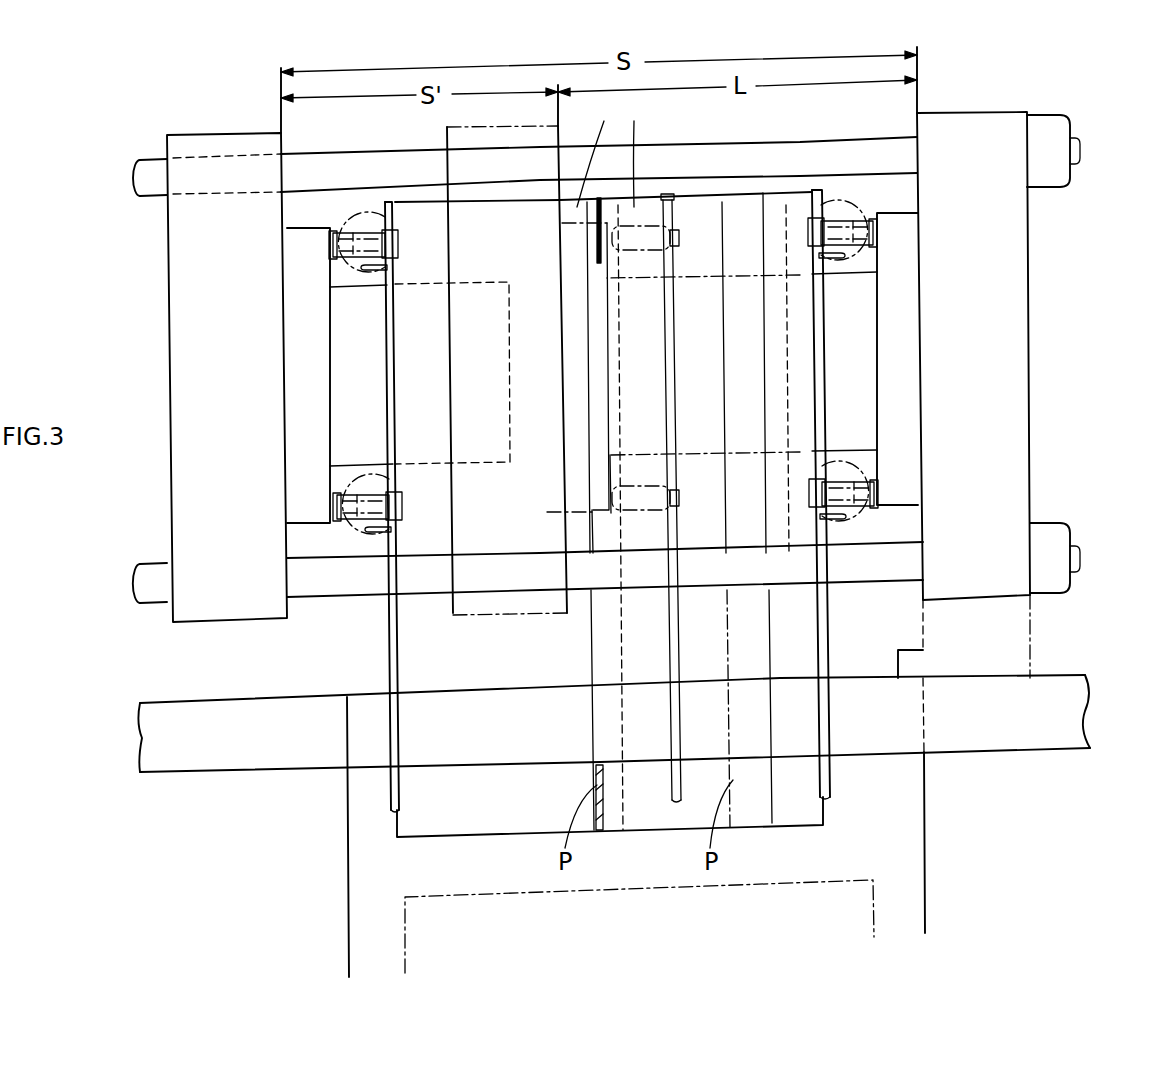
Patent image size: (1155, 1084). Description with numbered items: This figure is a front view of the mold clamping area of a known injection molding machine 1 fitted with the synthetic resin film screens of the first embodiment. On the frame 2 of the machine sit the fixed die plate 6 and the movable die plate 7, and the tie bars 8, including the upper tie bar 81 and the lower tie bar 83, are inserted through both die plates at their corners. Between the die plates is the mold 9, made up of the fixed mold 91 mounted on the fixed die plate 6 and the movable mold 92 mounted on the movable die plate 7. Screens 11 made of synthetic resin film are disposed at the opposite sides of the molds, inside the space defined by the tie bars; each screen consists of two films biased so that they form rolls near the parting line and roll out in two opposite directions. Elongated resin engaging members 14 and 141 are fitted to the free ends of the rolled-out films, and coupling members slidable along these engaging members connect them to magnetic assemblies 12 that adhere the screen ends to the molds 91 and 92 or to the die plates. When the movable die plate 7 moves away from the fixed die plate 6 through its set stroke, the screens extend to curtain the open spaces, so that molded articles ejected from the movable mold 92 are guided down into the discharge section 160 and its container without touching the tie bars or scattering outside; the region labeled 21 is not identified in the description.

The injection molding machine 1 is at (158, 697).
The frame 2 is at (1000, 764).
The frame step portion 21 is at (882, 680).
The fixed die plate 6 is at (950, 130).
The movable die plate 7 is at (237, 146).
The tie bars 8 is at (580, 344).
The tie bar 81 is at (156, 165).
The tie bar 83 is at (138, 567).
The mold 9 is at (602, 457).
The fixed mold 91 is at (795, 285).
The movable mold 92 is at (425, 300).
The screens 11 is at (648, 196).
The magnetic assemblies 12 is at (868, 218).
The engaging member 14 is at (610, 501).
The engaging member 141 is at (390, 627).
The discharge section 160 is at (363, 720).